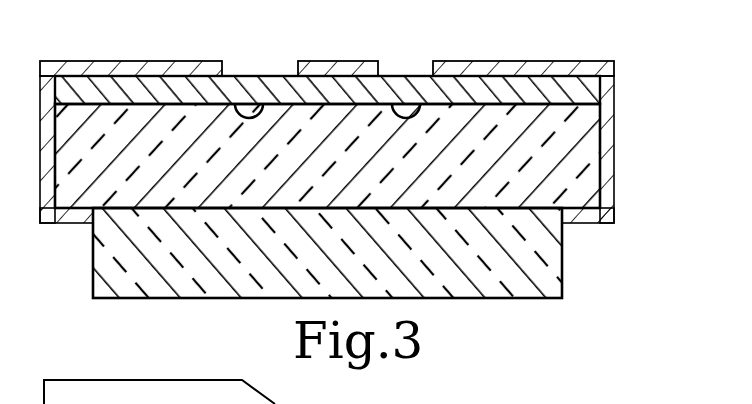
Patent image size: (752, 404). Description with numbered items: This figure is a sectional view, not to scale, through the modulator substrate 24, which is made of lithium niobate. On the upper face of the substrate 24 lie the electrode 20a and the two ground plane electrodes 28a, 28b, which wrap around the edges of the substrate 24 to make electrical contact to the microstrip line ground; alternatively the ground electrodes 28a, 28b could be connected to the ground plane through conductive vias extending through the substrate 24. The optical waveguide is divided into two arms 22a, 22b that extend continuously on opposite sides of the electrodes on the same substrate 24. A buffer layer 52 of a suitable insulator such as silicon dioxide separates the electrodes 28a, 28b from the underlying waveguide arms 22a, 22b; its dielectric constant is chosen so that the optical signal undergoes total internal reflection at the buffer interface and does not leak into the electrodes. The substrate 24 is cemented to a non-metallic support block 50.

The ground plane electrode 28a is at (133, 68).
The electrode 20a is at (335, 68).
The ground plane electrode 28b is at (533, 70).
The optical waveguide arm 22a is at (405, 104).
The optical waveguide arm 22b is at (249, 104).
The buffer layer 52 is at (590, 90).
The substrate 24 is at (592, 165).
The support block 50 is at (556, 258).